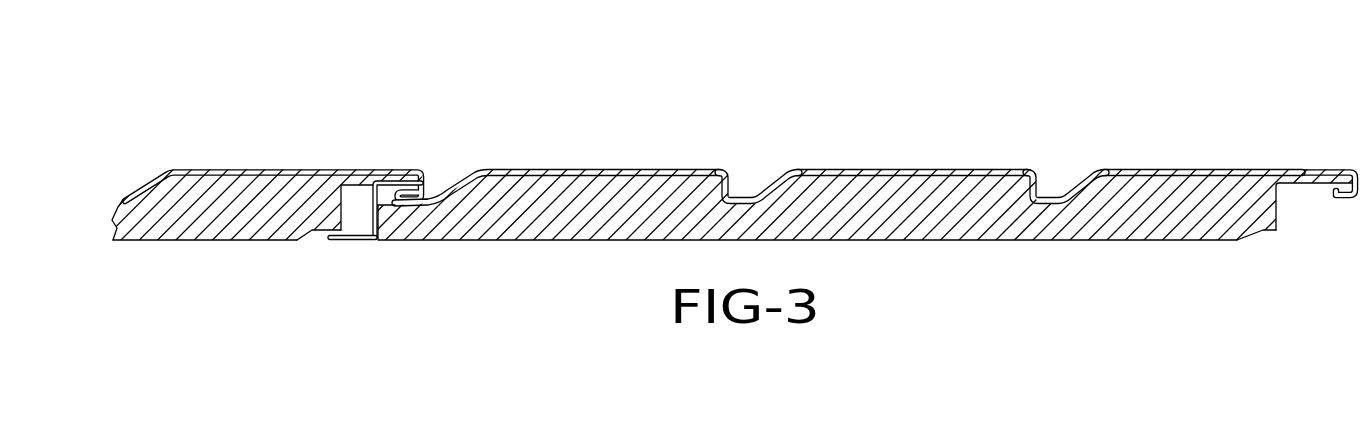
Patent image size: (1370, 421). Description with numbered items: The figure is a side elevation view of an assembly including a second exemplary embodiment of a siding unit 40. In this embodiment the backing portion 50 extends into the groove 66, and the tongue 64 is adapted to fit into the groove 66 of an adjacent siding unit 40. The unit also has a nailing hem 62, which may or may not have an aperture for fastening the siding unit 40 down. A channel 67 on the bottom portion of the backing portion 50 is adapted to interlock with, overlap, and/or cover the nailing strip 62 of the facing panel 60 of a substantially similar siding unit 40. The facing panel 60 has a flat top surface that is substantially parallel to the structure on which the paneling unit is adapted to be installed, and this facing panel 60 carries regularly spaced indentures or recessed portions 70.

The siding unit 40 is at (708, 164).
The backing portion 50 is at (907, 242).
The facing panel 60 is at (873, 173).
The nailing hem 62 is at (348, 240).
The tongue 64 is at (393, 185).
The groove 66 is at (428, 180).
The channel 67 is at (314, 228).
The recessed portions 70 is at (768, 190).